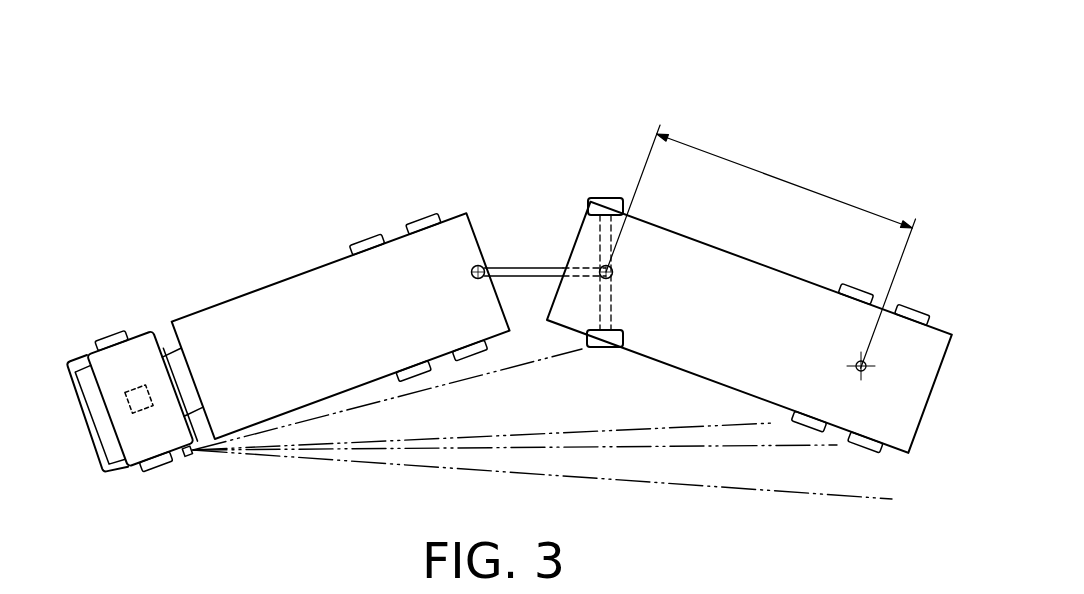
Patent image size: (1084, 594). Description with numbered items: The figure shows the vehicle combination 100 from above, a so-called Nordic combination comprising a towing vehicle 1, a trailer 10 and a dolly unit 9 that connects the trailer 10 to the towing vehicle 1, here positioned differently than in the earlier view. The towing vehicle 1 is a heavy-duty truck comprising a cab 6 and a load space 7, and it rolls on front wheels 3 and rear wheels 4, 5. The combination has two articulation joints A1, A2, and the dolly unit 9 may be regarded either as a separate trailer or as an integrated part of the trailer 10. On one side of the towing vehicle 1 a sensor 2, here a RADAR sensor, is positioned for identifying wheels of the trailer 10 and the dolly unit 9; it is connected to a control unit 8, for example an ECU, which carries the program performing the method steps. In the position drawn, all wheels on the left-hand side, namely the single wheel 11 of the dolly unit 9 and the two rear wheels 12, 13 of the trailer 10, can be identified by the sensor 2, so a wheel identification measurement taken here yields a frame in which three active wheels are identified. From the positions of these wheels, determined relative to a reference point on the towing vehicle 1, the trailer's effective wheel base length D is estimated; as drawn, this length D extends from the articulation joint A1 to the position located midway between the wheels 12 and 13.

The vehicle combination 100 is at (535, 87).
The towing vehicle 1 is at (341, 342).
The load space 7 is at (282, 277).
The sensor 2 is at (191, 458).
The front wheels 3 is at (158, 464).
The rear wheel 4 is at (415, 378).
The rear wheel 5 is at (473, 360).
The cab 6 is at (76, 425).
The control unit 8 is at (128, 410).
The dolly unit 9 is at (525, 266).
The trailer 10 is at (742, 254).
The wheel 11 is at (598, 348).
The rear wheel 12 is at (808, 428).
The rear wheel 13 is at (862, 450).
The articulation joint A1 is at (613, 268).
The articulation joint A2 is at (480, 266).
The wheel base length D is at (760, 246).